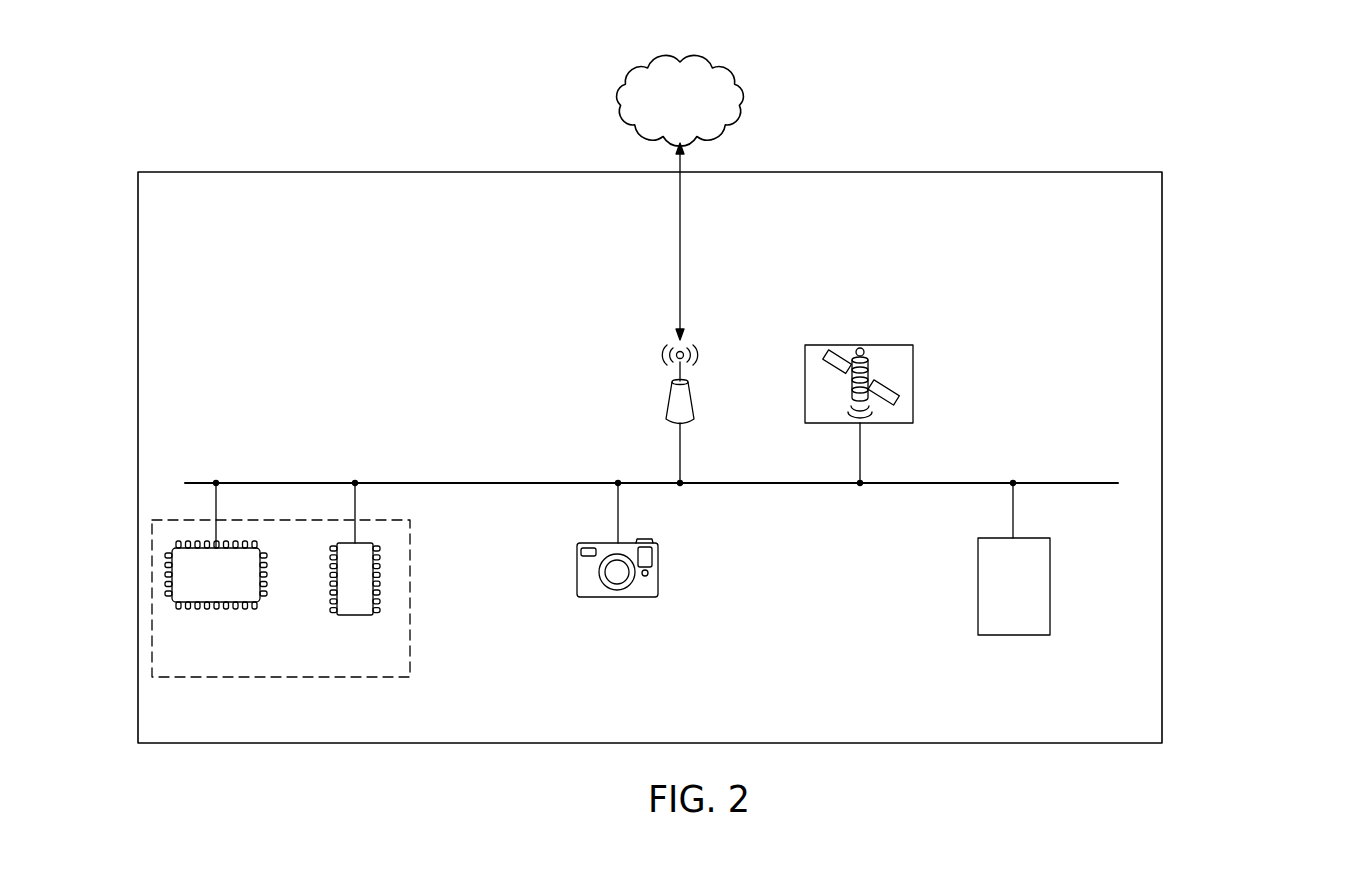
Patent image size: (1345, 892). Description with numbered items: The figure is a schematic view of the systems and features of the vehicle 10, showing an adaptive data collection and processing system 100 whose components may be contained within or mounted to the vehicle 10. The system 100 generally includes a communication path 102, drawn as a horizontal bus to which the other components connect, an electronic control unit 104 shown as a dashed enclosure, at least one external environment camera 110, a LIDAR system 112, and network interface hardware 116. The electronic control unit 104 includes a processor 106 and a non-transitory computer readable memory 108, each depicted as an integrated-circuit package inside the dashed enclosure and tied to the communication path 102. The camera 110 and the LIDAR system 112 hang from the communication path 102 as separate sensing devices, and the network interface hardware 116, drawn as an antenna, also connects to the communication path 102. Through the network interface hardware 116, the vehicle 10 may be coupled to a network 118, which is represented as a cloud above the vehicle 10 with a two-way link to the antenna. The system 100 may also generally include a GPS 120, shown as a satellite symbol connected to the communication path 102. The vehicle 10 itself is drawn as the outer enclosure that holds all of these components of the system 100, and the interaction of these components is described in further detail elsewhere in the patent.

The vehicle 10 is at (1162, 278).
The adaptive data collection and processing system 100 is at (202, 140).
The communication path 102 is at (197, 483).
The electronic control unit 104 is at (412, 660).
The processor 106 is at (248, 604).
The non-transitory computer readable memory 108 is at (354, 617).
The external environment camera 110 is at (617, 598).
The LIDAR system 112 is at (1013, 637).
The network interface hardware 116 is at (672, 386).
The network 118 is at (615, 100).
The GPS 120 is at (862, 345).